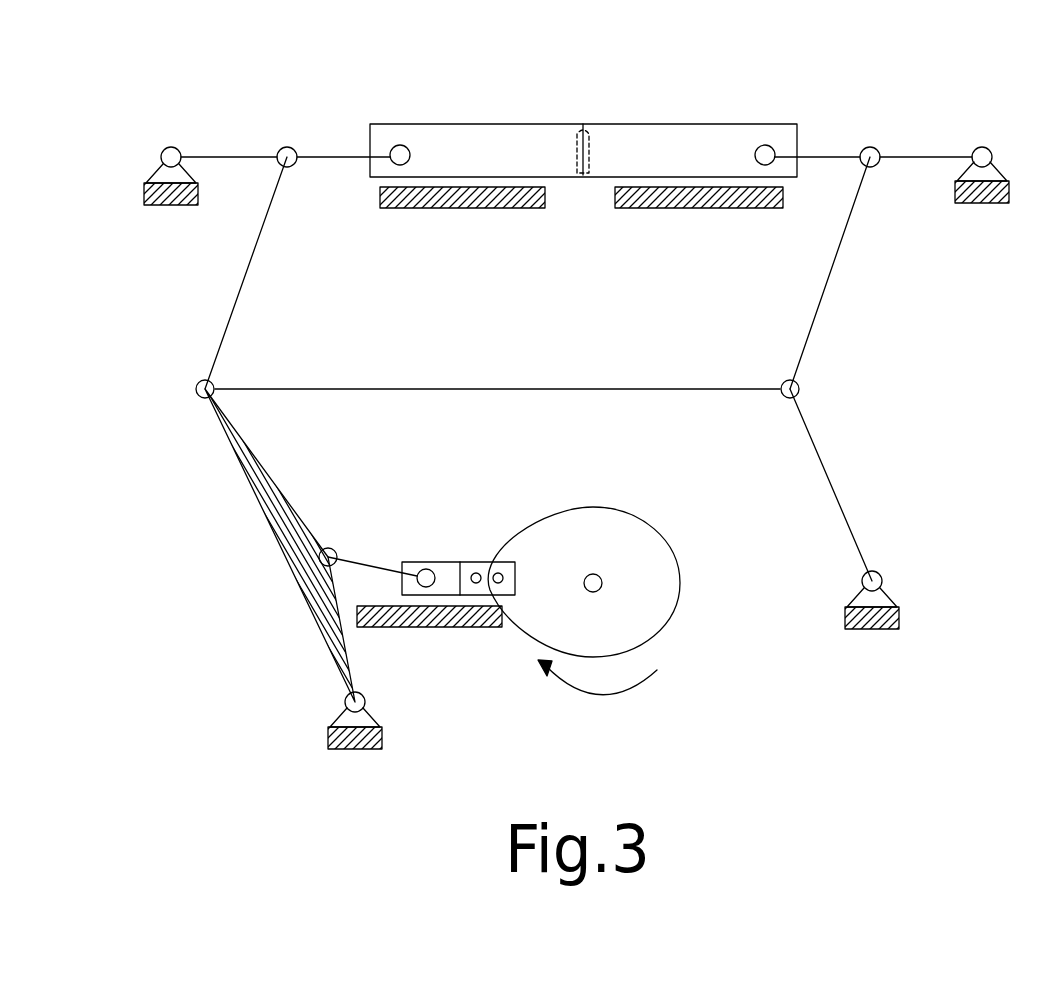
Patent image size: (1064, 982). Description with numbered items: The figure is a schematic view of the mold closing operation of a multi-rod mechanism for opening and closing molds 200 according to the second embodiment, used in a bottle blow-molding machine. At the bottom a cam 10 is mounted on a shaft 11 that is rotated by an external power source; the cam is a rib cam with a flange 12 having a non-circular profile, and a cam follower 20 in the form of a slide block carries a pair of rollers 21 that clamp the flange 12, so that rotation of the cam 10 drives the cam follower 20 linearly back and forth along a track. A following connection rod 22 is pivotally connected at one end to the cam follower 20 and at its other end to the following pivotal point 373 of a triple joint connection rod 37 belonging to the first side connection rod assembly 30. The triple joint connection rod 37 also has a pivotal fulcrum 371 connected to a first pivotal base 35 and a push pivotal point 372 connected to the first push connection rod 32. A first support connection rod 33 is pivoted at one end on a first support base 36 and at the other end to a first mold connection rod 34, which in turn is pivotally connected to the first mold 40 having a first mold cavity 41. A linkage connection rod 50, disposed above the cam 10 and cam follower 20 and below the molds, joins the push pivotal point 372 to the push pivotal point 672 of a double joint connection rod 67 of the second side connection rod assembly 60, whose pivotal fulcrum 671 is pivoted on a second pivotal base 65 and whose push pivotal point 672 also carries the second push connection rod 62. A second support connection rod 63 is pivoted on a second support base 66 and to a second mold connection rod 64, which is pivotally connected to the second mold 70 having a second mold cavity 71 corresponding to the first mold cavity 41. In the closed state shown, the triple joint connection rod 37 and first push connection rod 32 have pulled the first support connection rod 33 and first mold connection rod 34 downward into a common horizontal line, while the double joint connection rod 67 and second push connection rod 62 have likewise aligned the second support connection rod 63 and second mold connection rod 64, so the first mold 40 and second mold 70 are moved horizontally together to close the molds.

The multi-rod mechanism for opening and closing molds 200 is at (184, 48).
The cam 10 is at (622, 510).
The shaft 11 is at (598, 577).
The flange 12 is at (508, 540).
The cam follower 20 is at (428, 562).
The rollers 21 is at (495, 573).
The following connection rod 22 is at (417, 568).
The first side connection rod assembly 30 is at (224, 442).
The first push connection rod 32 is at (252, 251).
The first support connection rod 33 is at (221, 157).
The first mold connection rod 34 is at (330, 157).
The first pivotal base 35 is at (366, 707).
The first support base 36 is at (164, 152).
The triple joint connection rod 37 is at (266, 518).
The pivotal fulcrum 371 is at (345, 702).
The push pivotal point 372 is at (198, 383).
The following pivotal point 373 is at (333, 548).
The first mold 40 is at (467, 124).
The first mold cavity 41 is at (576, 178).
The linkage connection rod 50 is at (612, 389).
The second side connection rod assembly 60 is at (866, 338).
The second push connection rod 62 is at (830, 275).
The second support connection rod 63 is at (925, 157).
The second mold connection rod 64 is at (820, 157).
The second pivotal base 65 is at (888, 599).
The second support base 66 is at (991, 153).
The double joint connection rod 67 is at (823, 467).
The pivotal fulcrum 671 is at (881, 575).
The push pivotal point 672 is at (800, 389).
The second mold 70 is at (672, 124).
The second mold cavity 71 is at (590, 178).